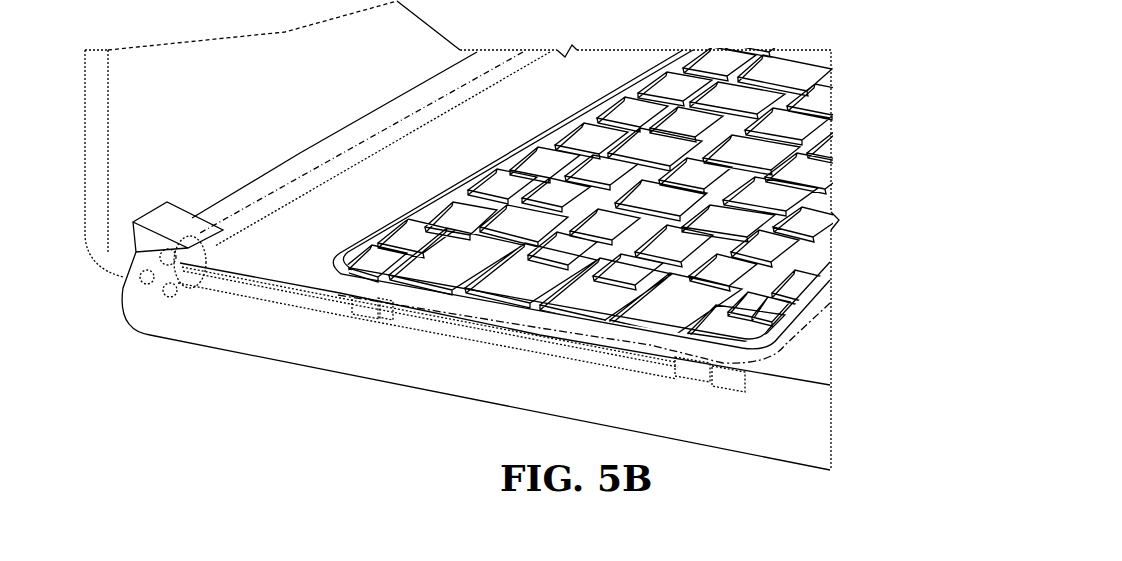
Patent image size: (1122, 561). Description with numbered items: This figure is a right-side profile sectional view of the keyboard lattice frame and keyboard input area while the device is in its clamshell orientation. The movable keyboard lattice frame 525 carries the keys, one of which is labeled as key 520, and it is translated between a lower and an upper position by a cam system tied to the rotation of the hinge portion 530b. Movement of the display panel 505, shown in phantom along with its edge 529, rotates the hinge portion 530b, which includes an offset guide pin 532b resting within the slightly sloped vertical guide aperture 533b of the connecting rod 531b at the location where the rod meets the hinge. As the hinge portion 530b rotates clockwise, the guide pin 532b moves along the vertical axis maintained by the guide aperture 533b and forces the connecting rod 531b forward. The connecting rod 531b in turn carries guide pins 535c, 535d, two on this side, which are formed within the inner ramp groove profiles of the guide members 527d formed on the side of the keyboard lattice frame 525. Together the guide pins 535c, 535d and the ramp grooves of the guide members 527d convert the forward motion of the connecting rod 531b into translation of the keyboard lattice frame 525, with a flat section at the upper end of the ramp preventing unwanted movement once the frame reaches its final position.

The display panel 505 is at (95, 150).
The key 520 is at (490, 182).
The keyboard lattice frame 525 is at (327, 279).
The hinge edge 529 is at (313, 180).
The hinge portion 530b is at (168, 210).
The connecting rod 531b is at (258, 297).
The offset guide pin 532b is at (178, 296).
The vertical guide aperture 533b is at (167, 290).
The guide pin 535c is at (356, 310).
The guide pin 535d is at (677, 378).
The guide member 527d is at (383, 312).